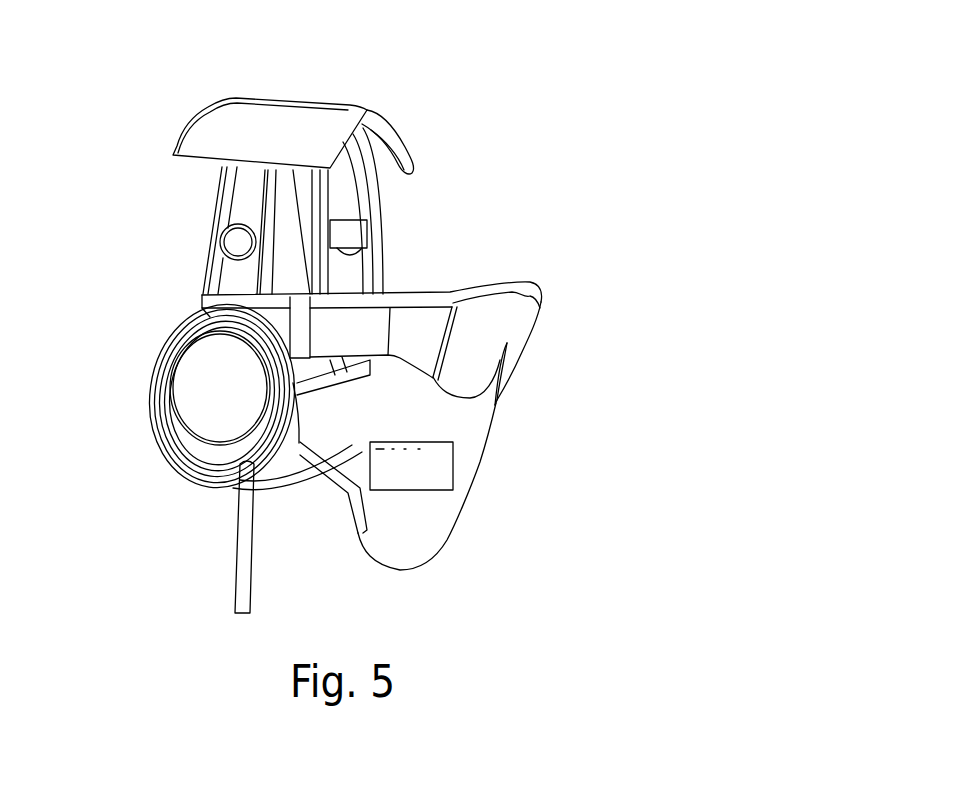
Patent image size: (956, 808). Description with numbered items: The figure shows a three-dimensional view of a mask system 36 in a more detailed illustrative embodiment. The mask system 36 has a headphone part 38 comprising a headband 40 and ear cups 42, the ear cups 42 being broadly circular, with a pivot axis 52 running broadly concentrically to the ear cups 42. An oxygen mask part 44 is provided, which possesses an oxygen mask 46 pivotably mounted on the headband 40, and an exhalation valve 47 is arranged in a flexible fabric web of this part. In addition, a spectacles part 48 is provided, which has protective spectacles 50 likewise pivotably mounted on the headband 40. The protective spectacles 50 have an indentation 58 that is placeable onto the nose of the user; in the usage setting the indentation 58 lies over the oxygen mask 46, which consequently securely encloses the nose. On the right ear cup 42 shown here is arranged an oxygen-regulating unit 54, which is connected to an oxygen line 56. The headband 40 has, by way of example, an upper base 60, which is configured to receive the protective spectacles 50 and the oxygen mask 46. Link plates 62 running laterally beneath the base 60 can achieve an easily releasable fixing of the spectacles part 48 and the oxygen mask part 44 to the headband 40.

The mask system 36 is at (447, 117).
The headphone part 38 is at (155, 147).
The headband 40 is at (210, 260).
The ear cups 42 is at (170, 333).
The oxygen mask part 44 is at (453, 550).
The oxygen mask 46 is at (460, 462).
The exhalation valve 47 is at (453, 450).
The spectacles part 48 is at (455, 268).
The protective spectacles 50 is at (528, 291).
The pivot axis 52 is at (216, 390).
The oxygen-regulating unit 54 is at (197, 413).
The oxygen line 56 is at (243, 580).
The indentation 58 is at (507, 353).
The upper base 60 is at (227, 115).
The link plates 62 is at (350, 235).